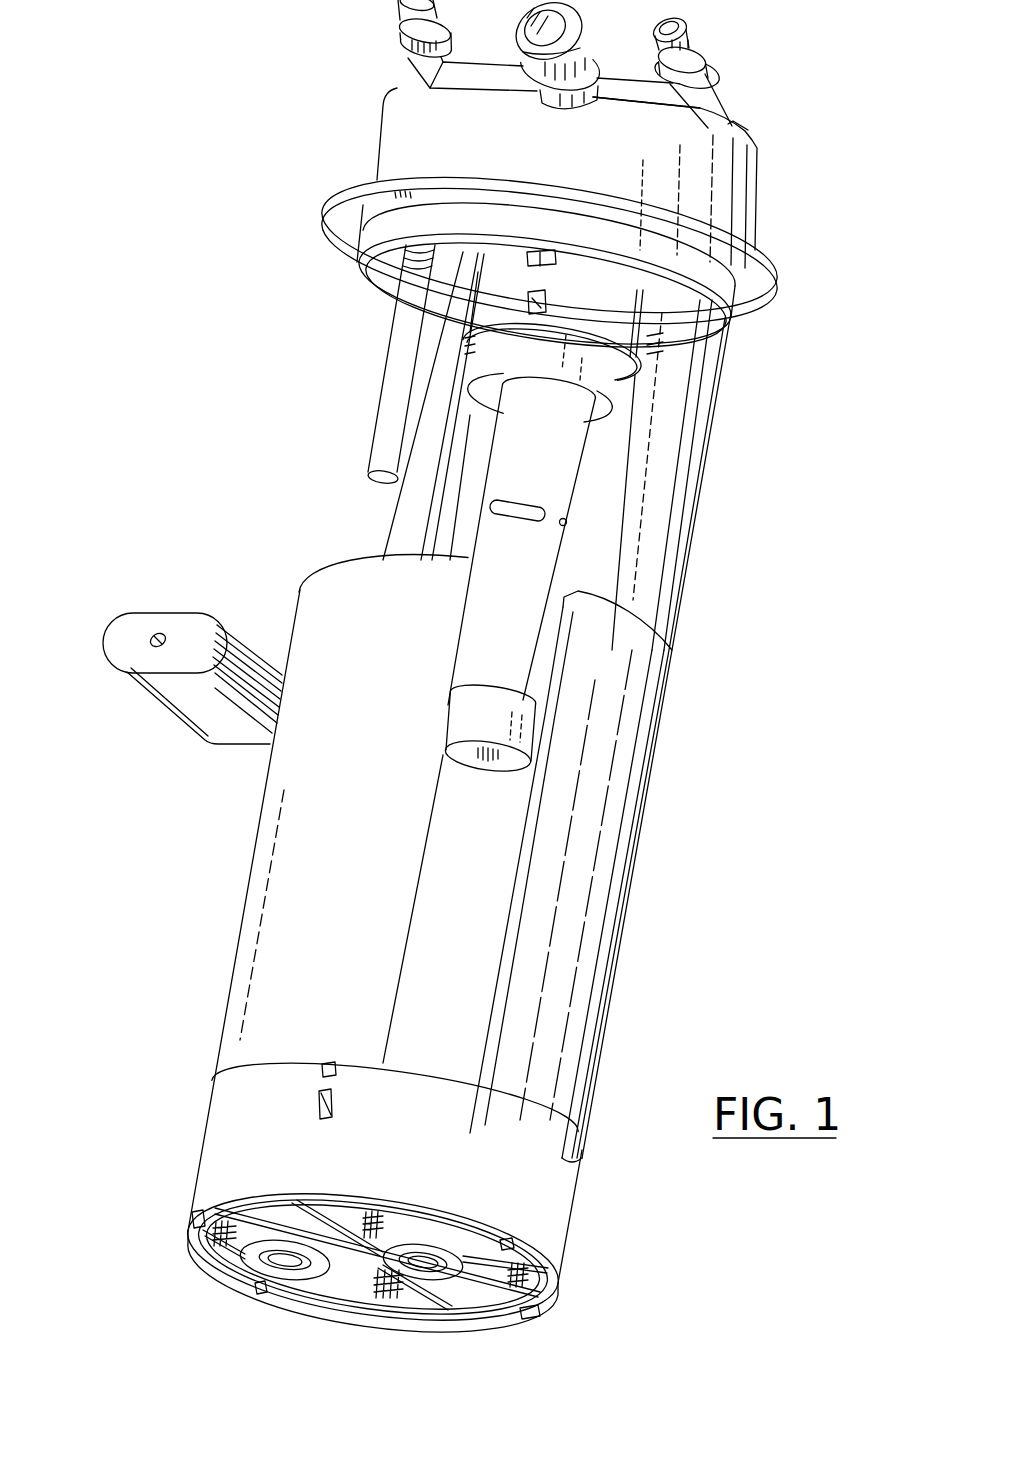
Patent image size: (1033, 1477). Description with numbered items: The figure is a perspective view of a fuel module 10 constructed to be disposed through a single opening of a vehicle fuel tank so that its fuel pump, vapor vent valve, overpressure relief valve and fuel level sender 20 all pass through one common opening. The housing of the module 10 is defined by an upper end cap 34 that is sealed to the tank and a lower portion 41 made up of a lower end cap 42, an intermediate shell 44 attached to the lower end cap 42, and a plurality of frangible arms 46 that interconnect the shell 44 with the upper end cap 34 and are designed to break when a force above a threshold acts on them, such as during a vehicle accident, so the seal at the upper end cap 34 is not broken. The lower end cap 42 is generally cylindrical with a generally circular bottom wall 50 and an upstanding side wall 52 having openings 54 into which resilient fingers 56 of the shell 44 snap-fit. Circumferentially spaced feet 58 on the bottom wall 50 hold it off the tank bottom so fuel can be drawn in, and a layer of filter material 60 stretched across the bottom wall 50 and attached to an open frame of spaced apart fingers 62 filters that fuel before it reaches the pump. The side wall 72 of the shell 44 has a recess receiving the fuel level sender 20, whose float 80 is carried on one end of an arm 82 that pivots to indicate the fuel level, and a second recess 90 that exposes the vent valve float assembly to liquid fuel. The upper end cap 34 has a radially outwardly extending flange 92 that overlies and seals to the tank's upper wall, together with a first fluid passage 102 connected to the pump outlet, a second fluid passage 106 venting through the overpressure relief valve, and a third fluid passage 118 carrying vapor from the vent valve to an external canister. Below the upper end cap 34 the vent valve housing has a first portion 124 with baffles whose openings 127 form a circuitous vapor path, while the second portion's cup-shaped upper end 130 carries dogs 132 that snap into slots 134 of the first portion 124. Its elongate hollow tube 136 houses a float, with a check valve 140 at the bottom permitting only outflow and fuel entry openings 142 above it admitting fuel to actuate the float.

The module 10 is at (261, 134).
The fuel level sender 20 is at (162, 734).
The upper end cap 34 is at (779, 180).
The lower portion 41 is at (596, 1165).
The lower end cap 42 is at (584, 1207).
The intermediate shell 44 is at (603, 945).
The frangible arms 46 is at (398, 508).
The bottom wall 50 is at (352, 1292).
The side wall 52 is at (205, 1135).
The openings 54 is at (328, 1106).
The resilient fingers 56 is at (318, 1110).
The feet 58 is at (556, 1297).
The filter material 60 is at (416, 1226).
The fingers 62 is at (222, 1256).
The side wall 72 is at (648, 738).
The float 80 is at (200, 620).
The arm 82 is at (160, 633).
The second recess 90 is at (520, 860).
The flange 92 is at (775, 283).
The first fluid passage 102 is at (705, 70).
The second fluid passage 106 is at (403, 28).
The third fluid passage 118 is at (535, 52).
The first portion 124 is at (640, 323).
The openings 127 is at (546, 266).
The upper end 130 is at (608, 412).
The dogs 132 is at (548, 310).
The slots 134 is at (531, 290).
The tube 136 is at (575, 455).
The check valve 140 is at (460, 764).
The fuel entry openings 142 is at (568, 520).